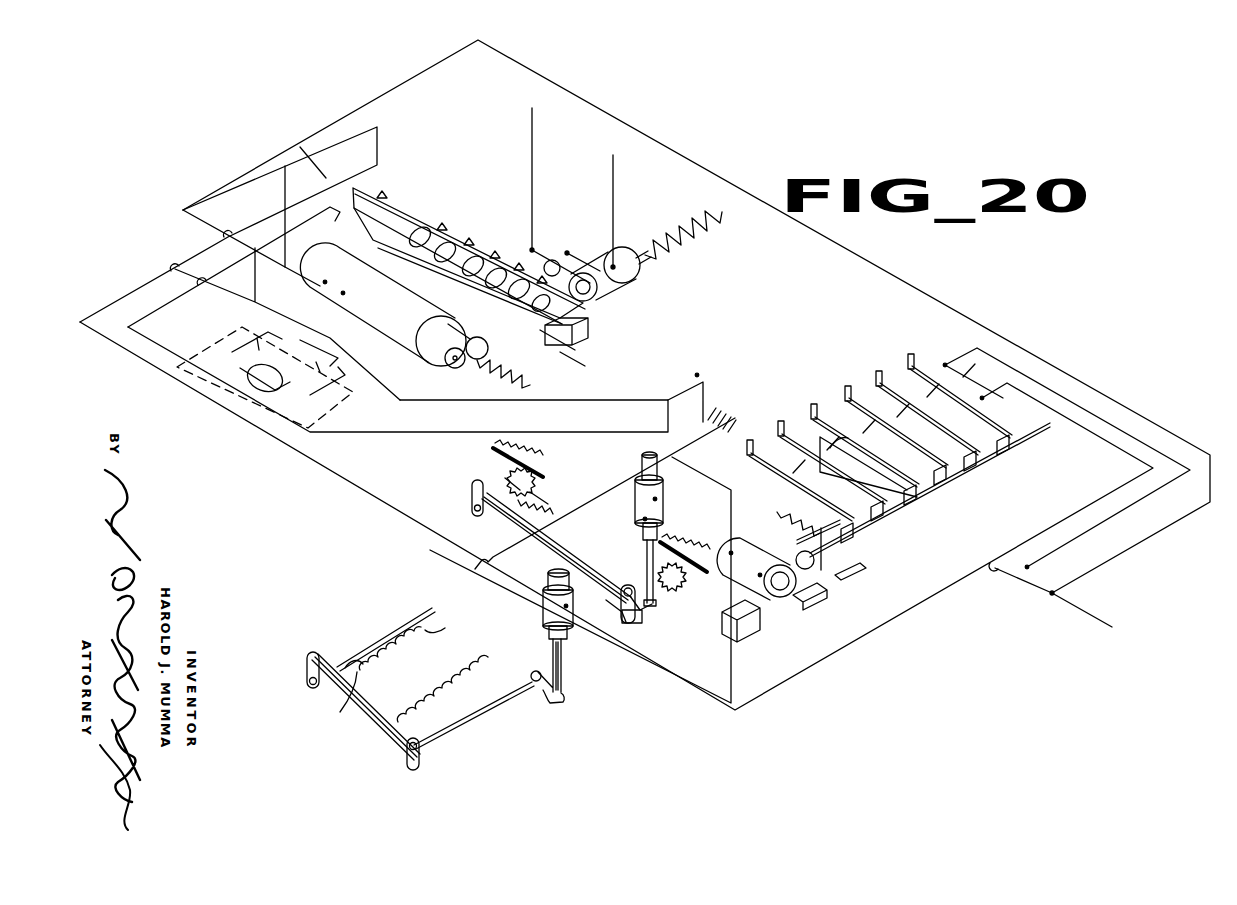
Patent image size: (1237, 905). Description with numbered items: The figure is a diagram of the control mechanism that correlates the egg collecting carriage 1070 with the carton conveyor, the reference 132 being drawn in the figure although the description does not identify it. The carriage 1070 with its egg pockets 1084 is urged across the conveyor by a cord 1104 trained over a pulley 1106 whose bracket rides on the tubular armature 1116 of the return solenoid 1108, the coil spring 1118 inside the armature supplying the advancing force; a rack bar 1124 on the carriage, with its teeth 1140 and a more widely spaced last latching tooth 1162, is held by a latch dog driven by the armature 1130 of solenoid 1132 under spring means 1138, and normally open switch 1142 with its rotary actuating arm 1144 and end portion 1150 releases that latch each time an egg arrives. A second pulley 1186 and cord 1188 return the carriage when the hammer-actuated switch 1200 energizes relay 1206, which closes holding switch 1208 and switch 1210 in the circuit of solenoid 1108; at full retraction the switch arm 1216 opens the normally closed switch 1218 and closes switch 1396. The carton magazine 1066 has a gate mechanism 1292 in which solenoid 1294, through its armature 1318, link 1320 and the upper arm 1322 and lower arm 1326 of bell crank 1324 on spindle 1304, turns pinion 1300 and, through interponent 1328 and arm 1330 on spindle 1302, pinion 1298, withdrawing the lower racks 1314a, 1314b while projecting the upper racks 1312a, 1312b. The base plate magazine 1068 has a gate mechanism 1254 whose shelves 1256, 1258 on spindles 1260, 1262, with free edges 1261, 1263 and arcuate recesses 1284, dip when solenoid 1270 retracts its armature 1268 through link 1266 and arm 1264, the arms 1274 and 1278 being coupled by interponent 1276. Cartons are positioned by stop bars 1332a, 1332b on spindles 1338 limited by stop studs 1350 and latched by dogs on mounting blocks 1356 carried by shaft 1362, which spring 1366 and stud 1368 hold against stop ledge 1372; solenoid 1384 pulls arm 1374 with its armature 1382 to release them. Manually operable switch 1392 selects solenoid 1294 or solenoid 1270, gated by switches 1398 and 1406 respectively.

The frame plate 132 is at (1049, 351).
The carton magazine 1066 is at (462, 500).
The supply magazine 1068 is at (493, 722).
The pocket supporting carriage 1070 is at (590, 337).
The pocket 1084 is at (468, 265).
The cord 1104 is at (325, 282).
The pulley 1106 is at (462, 369).
The solenoid 1108 is at (357, 318).
The tubular armature 1116 is at (425, 345).
The coil spring 1118 is at (520, 378).
The rack bar 1124 is at (386, 222).
The armature 1130 is at (597, 292).
The solenoid 1132 is at (640, 276).
The spring means 1138 is at (685, 250).
The teeth 1140 is at (500, 258).
The normally open switch 1142 is at (552, 265).
The rotary actuating arm 1144 is at (582, 345).
The radially directed end portion 1150 is at (545, 333).
The last latching tooth 1162 is at (392, 199).
The pulley 1186 is at (500, 330).
The cord 1188 is at (530, 392).
The normally open switch 1200 is at (697, 375).
The relay 1206 is at (224, 414).
The holding switch 1208 is at (272, 416).
The normally open switch 1210 is at (195, 376).
The actuating arm 1216 is at (335, 191).
The normally closed switch 1218 is at (343, 216).
The gate mechanism 1254 is at (298, 658).
The shelf 1256 is at (435, 626).
The shelf 1258 is at (435, 660).
The spindle 1260 is at (430, 612).
The free edge 1261 is at (356, 672).
The spindle 1262 is at (445, 744).
The free edge 1263 is at (492, 702).
The short arm 1264 is at (556, 702).
The link 1266 is at (564, 672).
The armature 1268 is at (548, 641).
The solenoid 1270 is at (543, 622).
The short arm 1274 is at (421, 764).
The elongated interponent 1276 is at (360, 678).
The short arm 1278 is at (305, 664).
The arcuate recesses 1284 is at (358, 692).
The gate mechanism 1292 is at (496, 472).
The solenoid 1294 is at (658, 499).
The pinion 1298 is at (530, 487).
The pinion 1300 is at (646, 522).
The spindle 1302 is at (490, 505).
The spindle 1304 is at (658, 570).
The upper rack 1312a is at (530, 462).
The upper rack 1312b is at (690, 543).
The lower rack 1314a is at (540, 500).
The lower rack 1314b is at (790, 592).
The armature 1318 is at (645, 520).
The link 1320 is at (650, 600).
The upper arm 1322 is at (642, 612).
The bell crank 1324 is at (615, 589).
The lower arm 1326 is at (630, 622).
The elongated interponent 1328 is at (575, 563).
The arm 1330 is at (500, 478).
The stop bar 1332a is at (908, 353).
The stop bar 1332b is at (837, 503).
The transverse spindle 1338 is at (870, 444).
The stop stud 1350 is at (790, 486).
The mounting block 1356 is at (848, 537).
The shaft 1362 is at (1003, 398).
The spring 1366 is at (778, 516).
The stud 1368 is at (800, 541).
The stop ledge 1372 is at (862, 574).
The arm 1374 is at (830, 596).
The armature 1382 is at (780, 595).
The solenoid 1384 is at (720, 551).
The manually operable switch 1392 is at (1024, 582).
The switch 1396 is at (320, 178).
The normally open switch 1398 is at (895, 436).
The normally open switch 1406 is at (1020, 376).